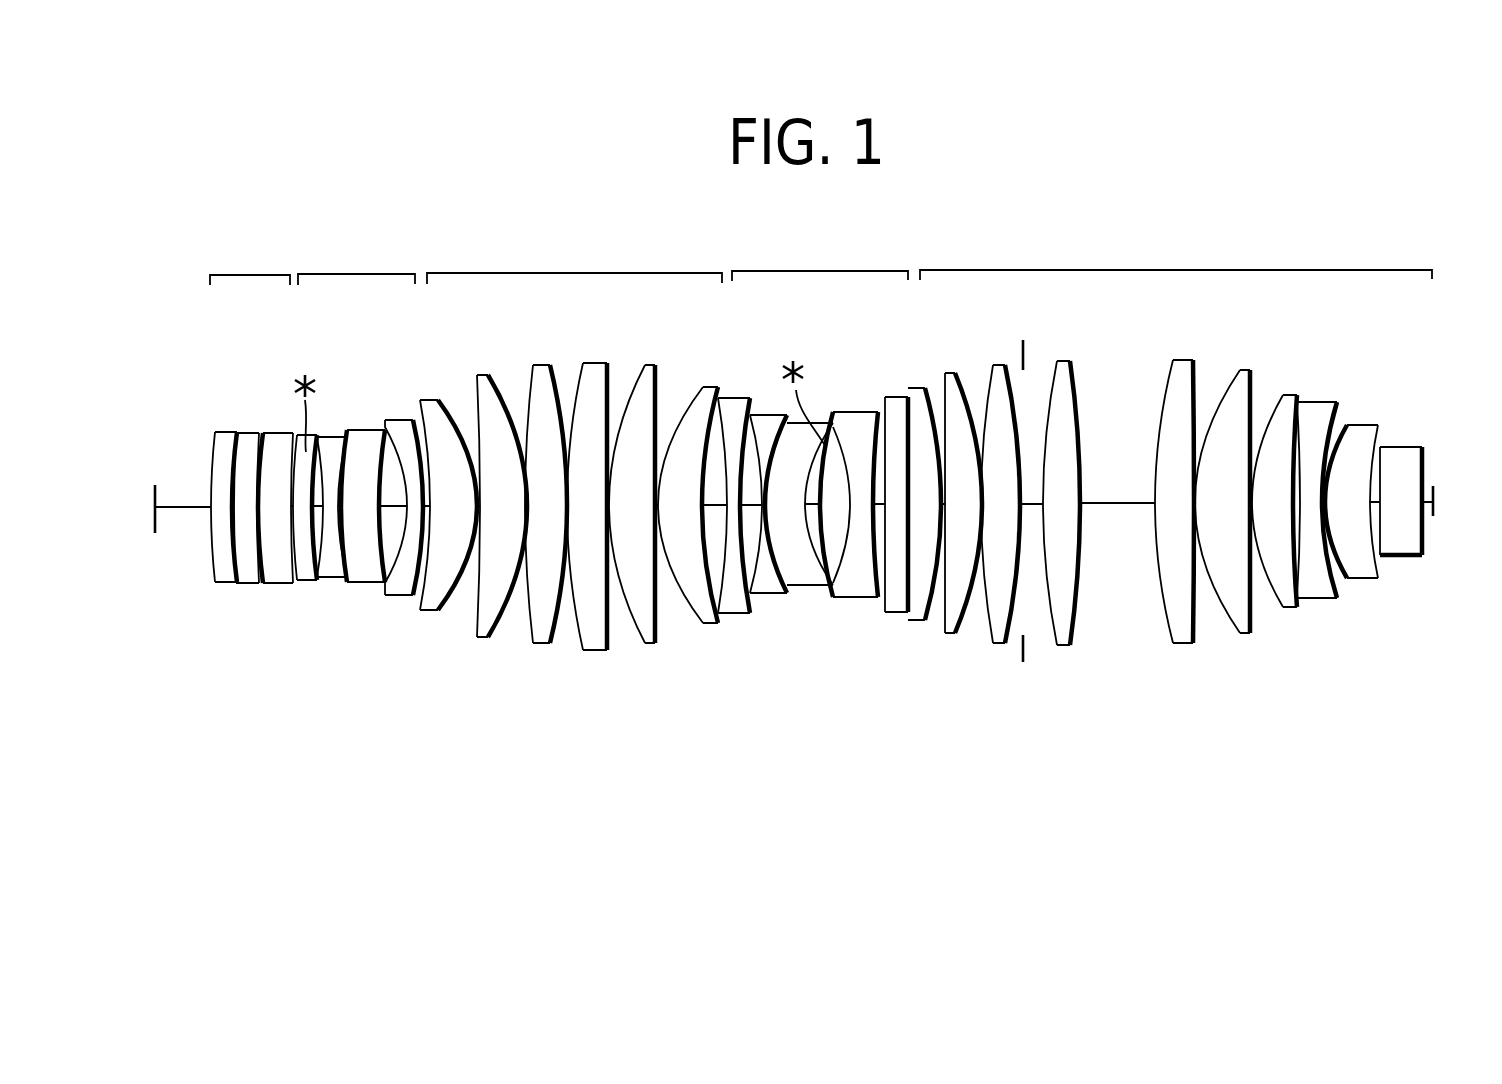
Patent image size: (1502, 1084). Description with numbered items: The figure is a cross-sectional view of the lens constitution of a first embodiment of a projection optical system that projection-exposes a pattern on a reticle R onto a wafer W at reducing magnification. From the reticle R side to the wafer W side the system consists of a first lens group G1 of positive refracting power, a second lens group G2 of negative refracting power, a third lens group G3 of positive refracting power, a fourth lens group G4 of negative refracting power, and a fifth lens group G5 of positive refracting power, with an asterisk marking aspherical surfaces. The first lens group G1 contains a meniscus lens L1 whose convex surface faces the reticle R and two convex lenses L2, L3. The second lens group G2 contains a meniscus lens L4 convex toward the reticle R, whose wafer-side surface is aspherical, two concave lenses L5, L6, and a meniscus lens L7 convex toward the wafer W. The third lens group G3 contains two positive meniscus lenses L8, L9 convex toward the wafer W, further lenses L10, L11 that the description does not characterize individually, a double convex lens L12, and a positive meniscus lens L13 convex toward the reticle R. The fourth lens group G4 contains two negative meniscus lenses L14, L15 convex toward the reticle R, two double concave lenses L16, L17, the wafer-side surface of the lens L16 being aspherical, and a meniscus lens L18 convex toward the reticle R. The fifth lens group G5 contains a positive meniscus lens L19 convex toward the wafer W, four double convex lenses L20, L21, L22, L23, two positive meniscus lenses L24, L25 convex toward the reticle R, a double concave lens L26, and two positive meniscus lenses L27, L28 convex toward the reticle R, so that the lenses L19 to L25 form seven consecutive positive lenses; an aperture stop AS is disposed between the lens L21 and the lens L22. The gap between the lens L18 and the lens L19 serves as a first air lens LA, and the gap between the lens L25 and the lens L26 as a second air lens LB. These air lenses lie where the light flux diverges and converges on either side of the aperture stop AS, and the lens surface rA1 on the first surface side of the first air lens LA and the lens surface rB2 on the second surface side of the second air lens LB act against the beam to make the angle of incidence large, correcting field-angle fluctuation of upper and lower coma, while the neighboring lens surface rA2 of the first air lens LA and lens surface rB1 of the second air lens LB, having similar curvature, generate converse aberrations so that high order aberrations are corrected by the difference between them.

The reticle R is at (160, 486).
The wafer W is at (1433, 490).
The aperture stop AS is at (1024, 345).
The first lens group G1 is at (241, 492).
The second lens group G2 is at (349, 495).
The third lens group G3 is at (577, 510).
The fourth lens group G4 is at (847, 509).
The fifth lens group G5 is at (1177, 485).
The meniscus lens L1 is at (231, 583).
The convex lens L2 is at (249, 585).
The convex lens L3 is at (273, 585).
The meniscus lens L4 is at (305, 582).
The concave lens L5 is at (332, 578).
The concave lens L6 is at (368, 584).
The meniscus lens L7 is at (393, 596).
The positive meniscus lens L8 is at (427, 611).
The positive meniscus lens L9 is at (483, 638).
The lens L10 is at (542, 645).
The lens L11 is at (592, 651).
The double convex lens L12 is at (652, 644).
The positive meniscus lens L13 is at (710, 624).
The negative meniscus lens L14 is at (733, 614).
The negative meniscus lens L15 is at (770, 594).
The double concave lens L16 is at (810, 586).
The double concave lens L17 is at (846, 598).
The meniscus lens L18 is at (918, 520).
The positive meniscus lens L19 is at (912, 621).
The double convex lens L20 is at (950, 634).
The double convex lens L21 is at (1000, 644).
The double convex lens L22 is at (1063, 646).
The double convex lens L23 is at (1182, 644).
The positive meniscus lens L24 is at (1243, 634).
The positive meniscus lens L25 is at (1292, 609).
The double concave lens L26 is at (1317, 496).
The positive meniscus lens L27 is at (1362, 579).
The positive meniscus lens L28 is at (1403, 556).
The first air lens LA is at (891, 520).
The lens surface on the first surface side of the first air lens rA1 is at (902, 430).
The lens surface on the second surface side of the first air lens rA2 is at (942, 454).
The second air lens LB is at (1279, 496).
The lens surface on the first surface side of the second air lens rB1 is at (1303, 445).
The lens surface on the second surface side of the second air lens rB2 is at (1337, 445).